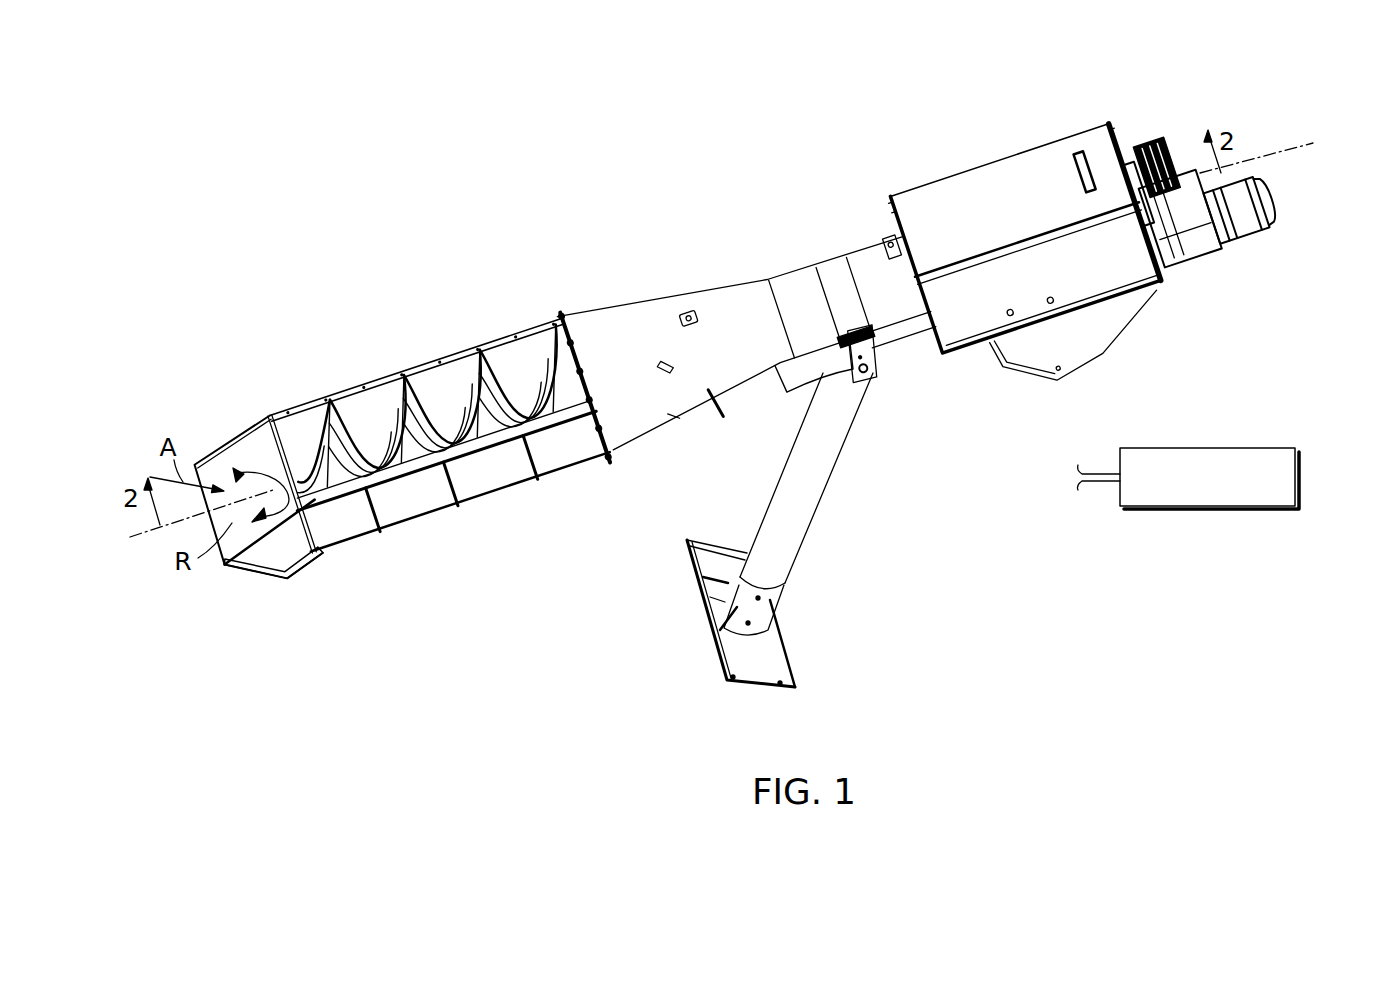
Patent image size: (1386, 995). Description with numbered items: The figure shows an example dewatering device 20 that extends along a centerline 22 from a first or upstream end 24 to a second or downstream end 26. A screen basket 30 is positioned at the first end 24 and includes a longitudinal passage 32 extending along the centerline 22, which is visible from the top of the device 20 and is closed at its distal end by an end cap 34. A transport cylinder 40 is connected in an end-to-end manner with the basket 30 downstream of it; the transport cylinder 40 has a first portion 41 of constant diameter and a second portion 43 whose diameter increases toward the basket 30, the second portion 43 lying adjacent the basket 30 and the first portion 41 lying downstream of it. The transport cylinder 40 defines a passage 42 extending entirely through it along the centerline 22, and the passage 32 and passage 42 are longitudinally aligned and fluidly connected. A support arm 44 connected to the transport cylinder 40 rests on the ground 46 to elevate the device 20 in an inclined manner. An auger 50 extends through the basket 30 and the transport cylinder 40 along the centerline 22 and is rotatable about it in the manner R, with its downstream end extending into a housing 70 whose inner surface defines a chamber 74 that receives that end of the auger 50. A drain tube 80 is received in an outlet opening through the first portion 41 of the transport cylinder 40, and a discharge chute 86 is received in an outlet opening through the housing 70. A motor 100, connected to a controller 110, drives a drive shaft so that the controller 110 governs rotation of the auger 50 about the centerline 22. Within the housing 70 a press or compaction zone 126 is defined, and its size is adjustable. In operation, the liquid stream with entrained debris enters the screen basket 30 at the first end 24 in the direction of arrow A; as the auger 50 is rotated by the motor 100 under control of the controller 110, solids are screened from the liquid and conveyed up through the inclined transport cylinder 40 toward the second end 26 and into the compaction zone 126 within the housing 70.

The dewatering device 20 is at (690, 218).
The centerline 22 is at (1276, 151).
The first end 24 is at (226, 592).
The second end 26 is at (1200, 276).
The screen basket 30 is at (410, 520).
The longitudinal passage 32 is at (382, 400).
The end cap 34 is at (292, 582).
The transport cylinder 40 is at (723, 292).
The first portion 41 is at (861, 252).
The passage 42 is at (668, 328).
The second portion 43 is at (596, 315).
The support arm 44 is at (820, 477).
The ground 46 is at (586, 614).
The auger 50 is at (482, 356).
The housing 70 is at (1063, 150).
The chamber 74 is at (1009, 165).
The drain tube 80 is at (903, 340).
The discharge chute 86 is at (1113, 318).
The motor 100 is at (1270, 204).
The controller 110 is at (1207, 446).
The compaction zone 126 is at (963, 203).